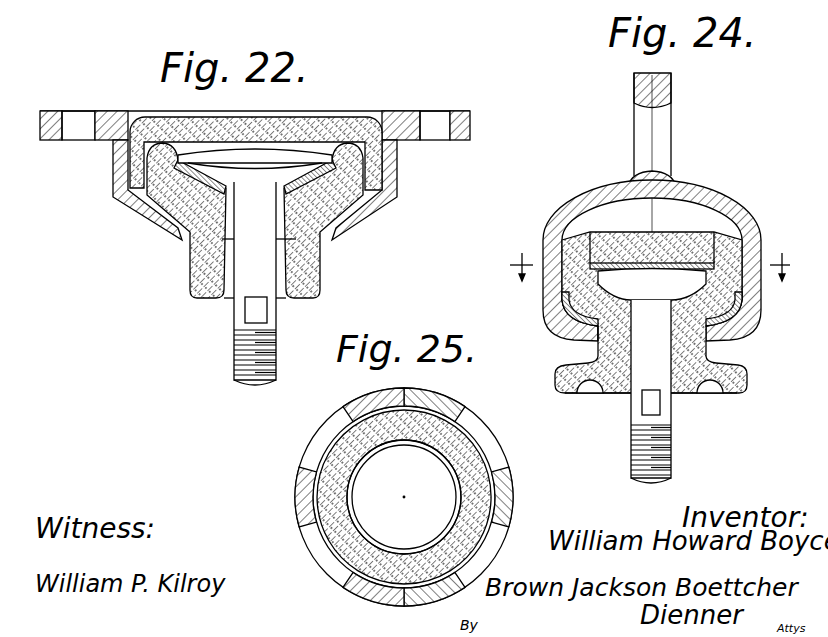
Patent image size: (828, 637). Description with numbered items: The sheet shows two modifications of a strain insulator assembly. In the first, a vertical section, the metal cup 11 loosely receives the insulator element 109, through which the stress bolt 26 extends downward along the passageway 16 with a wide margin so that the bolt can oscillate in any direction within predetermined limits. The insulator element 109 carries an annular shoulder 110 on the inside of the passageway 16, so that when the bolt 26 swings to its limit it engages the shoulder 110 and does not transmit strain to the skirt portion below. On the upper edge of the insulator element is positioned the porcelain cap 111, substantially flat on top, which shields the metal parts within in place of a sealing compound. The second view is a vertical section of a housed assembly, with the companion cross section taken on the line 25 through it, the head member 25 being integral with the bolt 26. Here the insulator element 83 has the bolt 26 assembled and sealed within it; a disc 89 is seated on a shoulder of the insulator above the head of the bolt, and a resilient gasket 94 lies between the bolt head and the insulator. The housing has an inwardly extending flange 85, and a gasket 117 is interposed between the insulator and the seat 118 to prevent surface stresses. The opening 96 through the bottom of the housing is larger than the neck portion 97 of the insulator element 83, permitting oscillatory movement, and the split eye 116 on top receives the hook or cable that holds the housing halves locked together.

In FIG. 22, the metal cup 11 is at (113, 176).
In FIG. 22, the porcelain cap 111 is at (277, 116).
In FIG. 22, the insulator element 109 is at (354, 228).
In FIG. 22, the annular shoulder 110 is at (321, 251).
In FIG. 22, the passageway 16 is at (222, 281).
In FIG. 22, the stress bolt 26 is at (250, 277).
In FIG. 24, the stress bolt 26 is at (647, 373).
In FIG. 24, the eye 116 is at (665, 96).
In FIG. 24, the gasket 117 is at (752, 304).
In FIG. 24, the seat 118 is at (736, 322).
In FIG. 24, the disc 89 is at (617, 262).
In FIG. 24, the inwardly extending flange 85 is at (650, 283).
In FIG. 25, the inwardly extending flange 85 is at (437, 482).
In FIG. 24, the opening 96 is at (597, 339).
In FIG. 24, the resilient gasket 94 is at (603, 348).
In FIG. 24, the neck portion 97 is at (688, 336).
In FIG. 25, the neck portion 97 is at (480, 503).
In FIG. 24, the insulator element 83 is at (697, 389).
In FIG. 24, the head member 25 is at (650, 267).